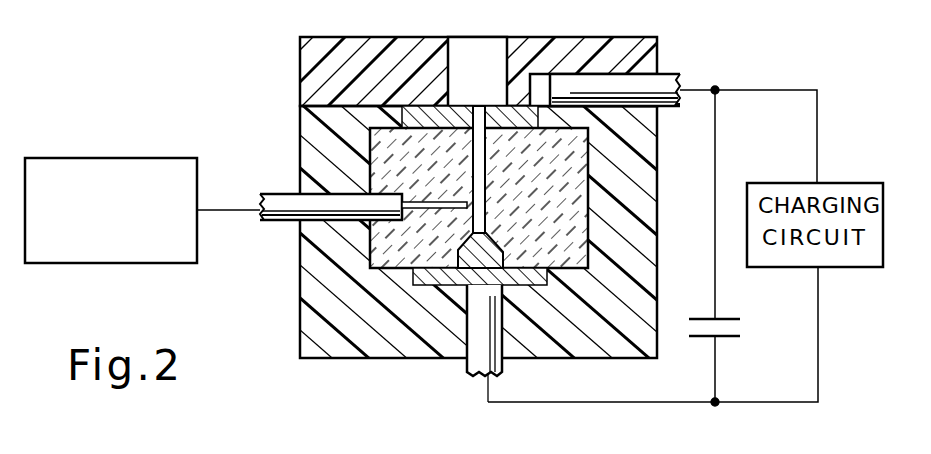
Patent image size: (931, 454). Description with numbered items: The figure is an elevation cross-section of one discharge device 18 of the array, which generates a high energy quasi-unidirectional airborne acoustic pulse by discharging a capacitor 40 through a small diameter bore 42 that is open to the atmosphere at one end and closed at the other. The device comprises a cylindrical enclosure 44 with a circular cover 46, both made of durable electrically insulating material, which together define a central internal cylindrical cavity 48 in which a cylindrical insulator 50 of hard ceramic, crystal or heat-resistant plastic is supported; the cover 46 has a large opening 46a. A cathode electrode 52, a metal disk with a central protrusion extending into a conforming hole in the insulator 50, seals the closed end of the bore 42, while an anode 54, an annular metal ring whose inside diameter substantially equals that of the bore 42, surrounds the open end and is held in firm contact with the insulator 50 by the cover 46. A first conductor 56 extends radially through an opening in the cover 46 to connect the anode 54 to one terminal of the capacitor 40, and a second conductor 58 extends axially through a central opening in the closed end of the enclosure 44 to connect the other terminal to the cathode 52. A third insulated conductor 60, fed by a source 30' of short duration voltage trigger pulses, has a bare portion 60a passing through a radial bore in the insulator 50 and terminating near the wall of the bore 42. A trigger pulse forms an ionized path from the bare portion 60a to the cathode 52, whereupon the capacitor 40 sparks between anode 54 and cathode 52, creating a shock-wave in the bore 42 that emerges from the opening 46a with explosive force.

The discharge device 18 is at (208, 278).
The source of trigger pulses 30' is at (142, 190).
The capacitor 40 is at (728, 337).
The bore 42 is at (467, 158).
The cylindrical enclosure 44 is at (302, 318).
The circular cover 46 is at (313, 64).
The opening 46a is at (490, 57).
The central internal cylindrical cavity 48 is at (588, 170).
The cylindrical insulator 50 is at (370, 155).
The cathode electrode 52 is at (528, 283).
The anode 54 is at (452, 100).
The first conductor 56 is at (668, 73).
The second conductor 58 is at (468, 363).
The third insulated conductor 60 is at (280, 220).
The bare portion 60a is at (426, 206).